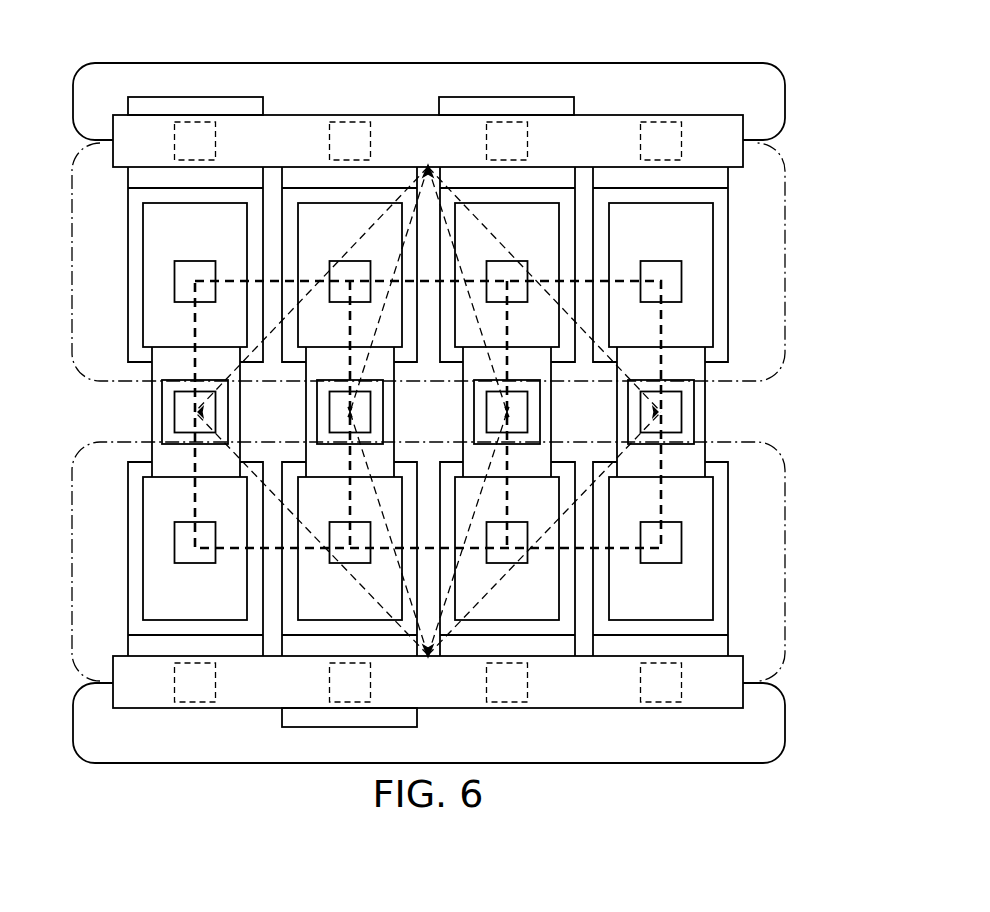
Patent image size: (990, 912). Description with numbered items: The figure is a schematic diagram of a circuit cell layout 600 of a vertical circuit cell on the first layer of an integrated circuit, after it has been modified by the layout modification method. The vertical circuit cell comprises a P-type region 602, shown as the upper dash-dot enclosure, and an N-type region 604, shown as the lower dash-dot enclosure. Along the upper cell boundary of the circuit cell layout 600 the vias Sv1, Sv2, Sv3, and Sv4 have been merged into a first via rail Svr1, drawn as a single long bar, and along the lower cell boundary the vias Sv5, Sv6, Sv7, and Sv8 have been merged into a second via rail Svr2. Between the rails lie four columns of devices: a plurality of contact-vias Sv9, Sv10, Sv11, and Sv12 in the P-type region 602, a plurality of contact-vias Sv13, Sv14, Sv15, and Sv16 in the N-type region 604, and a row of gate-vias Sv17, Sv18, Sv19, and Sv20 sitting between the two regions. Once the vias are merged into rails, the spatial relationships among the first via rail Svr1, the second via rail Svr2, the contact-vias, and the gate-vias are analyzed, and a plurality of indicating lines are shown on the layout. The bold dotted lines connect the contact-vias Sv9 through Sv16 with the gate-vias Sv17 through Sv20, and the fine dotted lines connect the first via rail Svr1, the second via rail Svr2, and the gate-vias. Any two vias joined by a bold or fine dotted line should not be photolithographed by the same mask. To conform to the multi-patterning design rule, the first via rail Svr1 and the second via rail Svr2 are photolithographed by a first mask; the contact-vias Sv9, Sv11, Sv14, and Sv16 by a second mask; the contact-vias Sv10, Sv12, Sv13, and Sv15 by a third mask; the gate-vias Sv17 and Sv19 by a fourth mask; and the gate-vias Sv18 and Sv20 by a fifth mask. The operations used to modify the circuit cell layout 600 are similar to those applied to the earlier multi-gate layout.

The circuit cell layout 600 is at (887, 85).
The P-type region 602 is at (785, 250).
The N-type region 604 is at (785, 577).
The first via rail Svr1 is at (733, 152).
The second via rail Svr2 is at (734, 692).
The via Sv1 is at (179, 152).
The via Sv2 is at (334, 152).
The via Sv3 is at (491, 152).
The via Sv4 is at (645, 152).
The via Sv5 is at (179, 695).
The via Sv6 is at (334, 695).
The via Sv7 is at (491, 695).
The via Sv8 is at (645, 695).
The contact-via Sv9 is at (195, 270).
The contact-via Sv10 is at (338, 270).
The contact-via Sv11 is at (516, 270).
The contact-via Sv12 is at (660, 270).
The contact-via Sv13 is at (195, 556).
The contact-via Sv14 is at (340, 556).
The contact-via Sv15 is at (516, 556).
The contact-via Sv16 is at (661, 556).
The gate-via Sv17 is at (185, 412).
The gate-via Sv18 is at (337, 412).
The gate-via Sv19 is at (522, 412).
The gate-via Sv20 is at (680, 412).